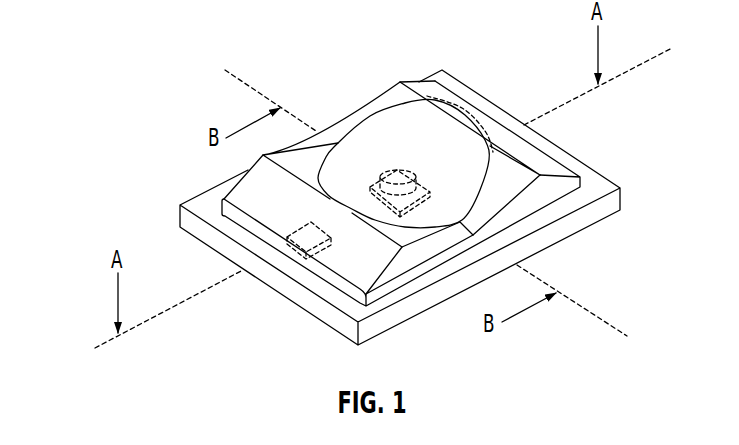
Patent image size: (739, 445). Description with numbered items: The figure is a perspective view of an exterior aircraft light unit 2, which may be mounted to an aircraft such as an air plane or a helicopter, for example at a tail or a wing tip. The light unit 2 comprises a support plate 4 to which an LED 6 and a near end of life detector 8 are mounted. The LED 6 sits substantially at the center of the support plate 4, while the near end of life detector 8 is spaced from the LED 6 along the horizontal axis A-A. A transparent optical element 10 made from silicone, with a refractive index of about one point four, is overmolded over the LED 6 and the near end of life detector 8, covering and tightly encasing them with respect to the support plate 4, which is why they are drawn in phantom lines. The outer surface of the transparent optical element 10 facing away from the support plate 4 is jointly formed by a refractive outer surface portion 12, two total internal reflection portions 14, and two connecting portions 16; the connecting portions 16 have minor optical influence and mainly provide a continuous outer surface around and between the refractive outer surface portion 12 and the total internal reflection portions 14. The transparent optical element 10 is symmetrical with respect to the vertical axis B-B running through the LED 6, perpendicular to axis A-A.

The exterior aircraft light unit 2 is at (131, 162).
The support plate 4 is at (282, 297).
The LED 6 is at (419, 184).
The near end of life detector 8 is at (297, 230).
The transparent optical element 10 is at (392, 84).
The refractive outer surface portion 12 is at (415, 144).
The total internal reflection portions 14 is at (273, 207).
The connecting portions 16 is at (314, 174).